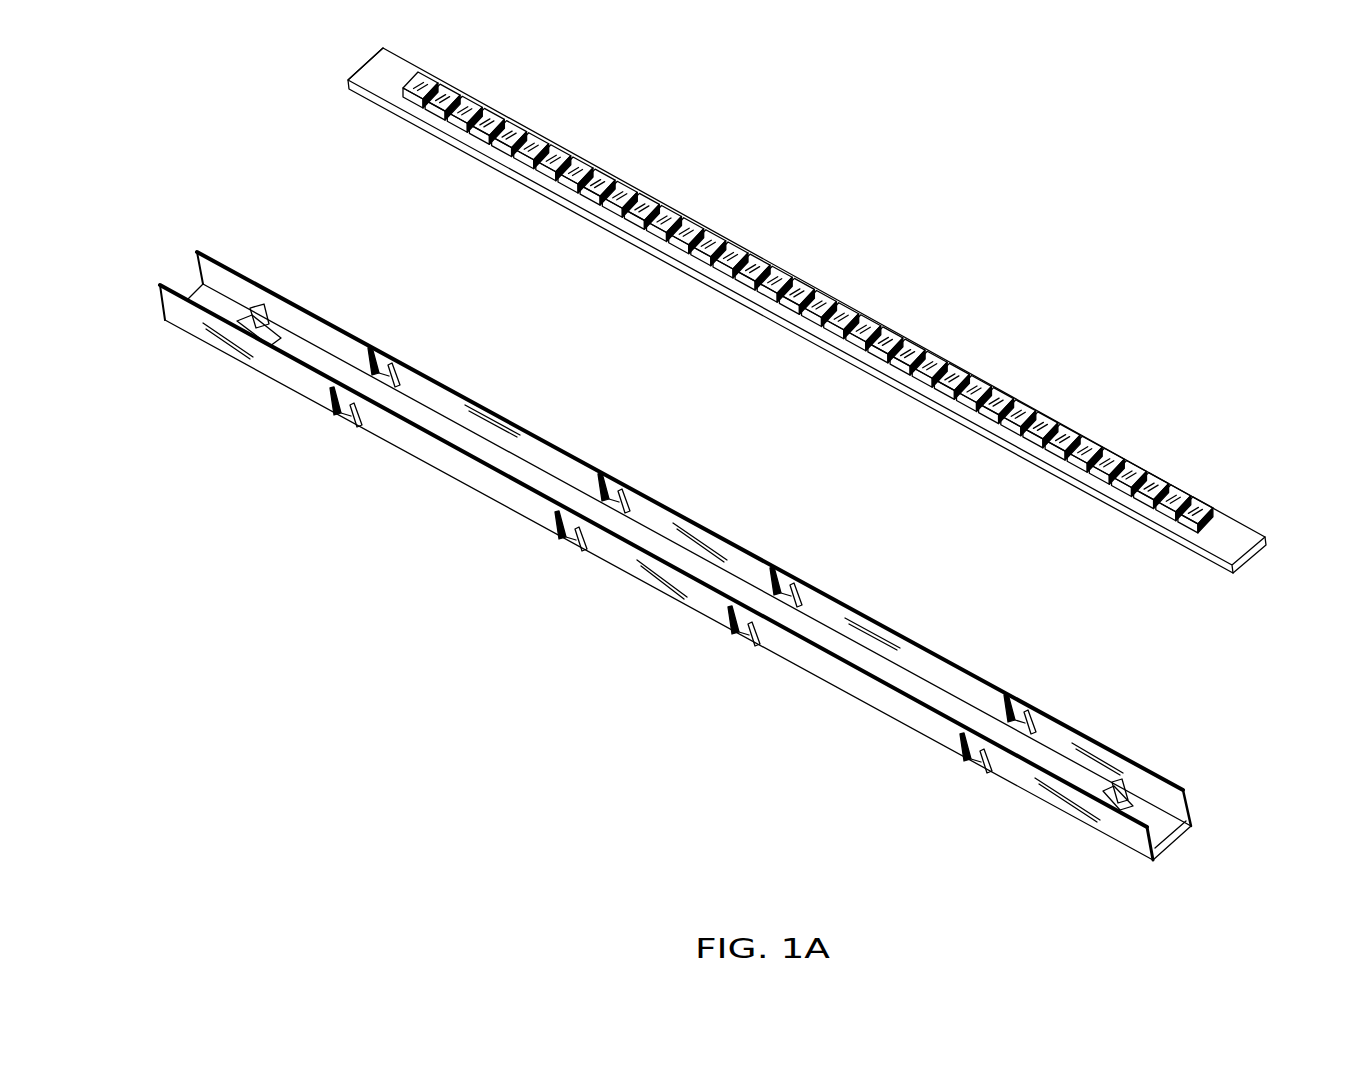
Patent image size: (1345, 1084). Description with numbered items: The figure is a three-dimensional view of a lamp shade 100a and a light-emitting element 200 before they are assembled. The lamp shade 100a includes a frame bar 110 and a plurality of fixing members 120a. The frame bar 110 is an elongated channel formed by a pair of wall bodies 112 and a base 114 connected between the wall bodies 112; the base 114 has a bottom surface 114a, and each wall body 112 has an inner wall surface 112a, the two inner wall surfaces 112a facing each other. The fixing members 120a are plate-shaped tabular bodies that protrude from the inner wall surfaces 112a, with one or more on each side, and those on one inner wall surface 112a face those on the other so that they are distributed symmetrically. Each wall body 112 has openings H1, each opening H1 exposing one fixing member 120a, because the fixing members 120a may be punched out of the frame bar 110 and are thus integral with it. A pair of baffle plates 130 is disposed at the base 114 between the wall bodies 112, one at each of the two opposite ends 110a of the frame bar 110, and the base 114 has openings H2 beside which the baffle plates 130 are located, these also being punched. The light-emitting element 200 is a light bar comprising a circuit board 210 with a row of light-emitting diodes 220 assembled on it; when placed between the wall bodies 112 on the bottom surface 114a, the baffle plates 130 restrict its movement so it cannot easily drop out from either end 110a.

The lamp shade 100a is at (667, 511).
The frame bar 110 is at (203, 152).
The end of the frame bar 110a is at (215, 333).
The wall body 112 is at (176, 308).
The inner wall surface 112a is at (333, 348).
The base 114 is at (203, 266).
The bottom surface 114a is at (303, 345).
The fixing member 120a is at (370, 350).
The baffle plate 130 is at (260, 312).
The opening H1 is at (330, 420).
The opening H2 is at (268, 320).
The light-emitting element 200 is at (838, 310).
The circuit board 210 is at (1240, 537).
The light-emitting diode 220 is at (1163, 477).